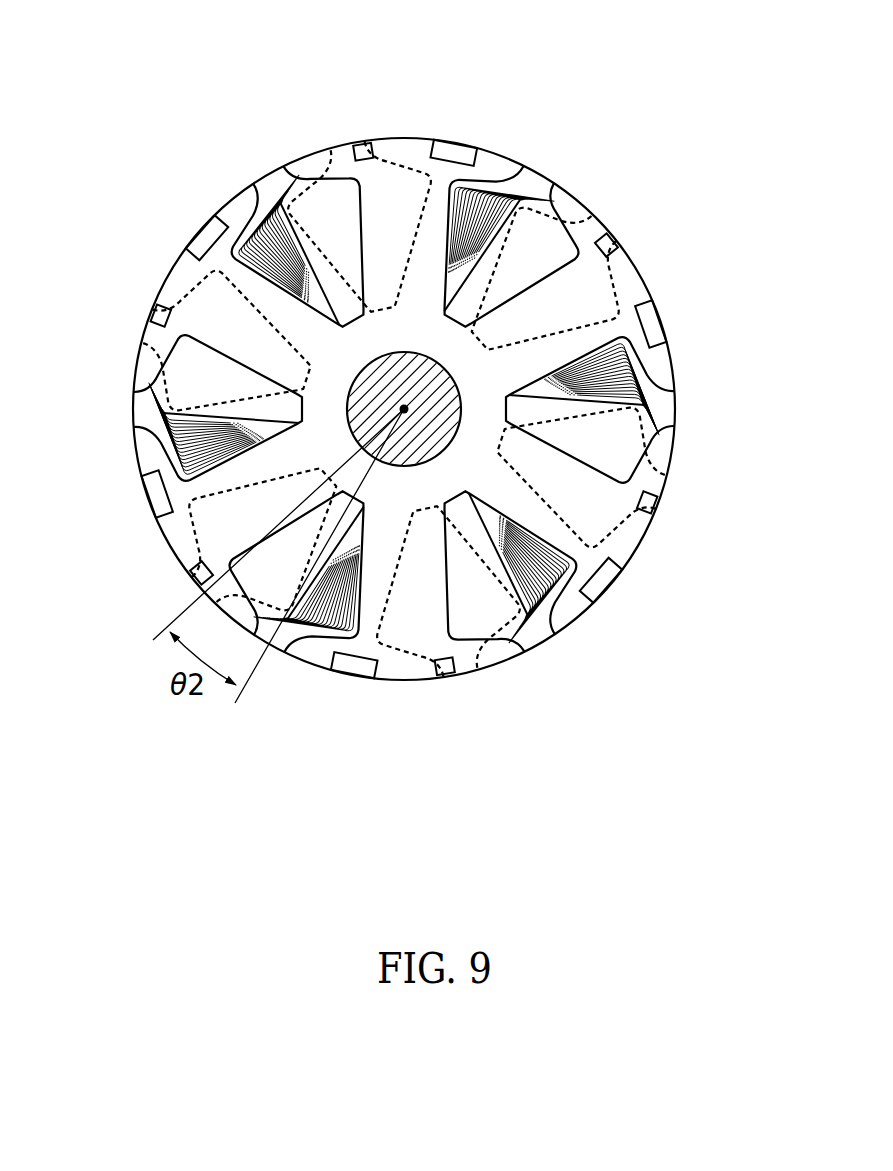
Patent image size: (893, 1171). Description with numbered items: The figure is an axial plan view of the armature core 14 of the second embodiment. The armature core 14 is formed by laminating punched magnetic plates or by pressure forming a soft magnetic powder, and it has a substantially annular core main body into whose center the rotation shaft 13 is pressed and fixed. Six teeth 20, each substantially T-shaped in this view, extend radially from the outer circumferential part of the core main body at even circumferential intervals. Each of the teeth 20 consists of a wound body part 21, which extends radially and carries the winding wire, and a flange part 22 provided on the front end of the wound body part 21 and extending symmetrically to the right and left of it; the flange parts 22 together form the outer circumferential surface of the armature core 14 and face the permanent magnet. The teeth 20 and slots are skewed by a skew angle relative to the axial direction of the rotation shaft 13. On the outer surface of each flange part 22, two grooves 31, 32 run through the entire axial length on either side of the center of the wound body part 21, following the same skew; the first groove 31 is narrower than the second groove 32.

The rotation shaft 13 is at (445, 368).
The armature core 14 is at (492, 120).
The teeth 20 is at (420, 138).
The wound body part 21 is at (360, 590).
The flange part 22 is at (374, 680).
The first groove 31 is at (655, 503).
The second groove 32 is at (610, 588).